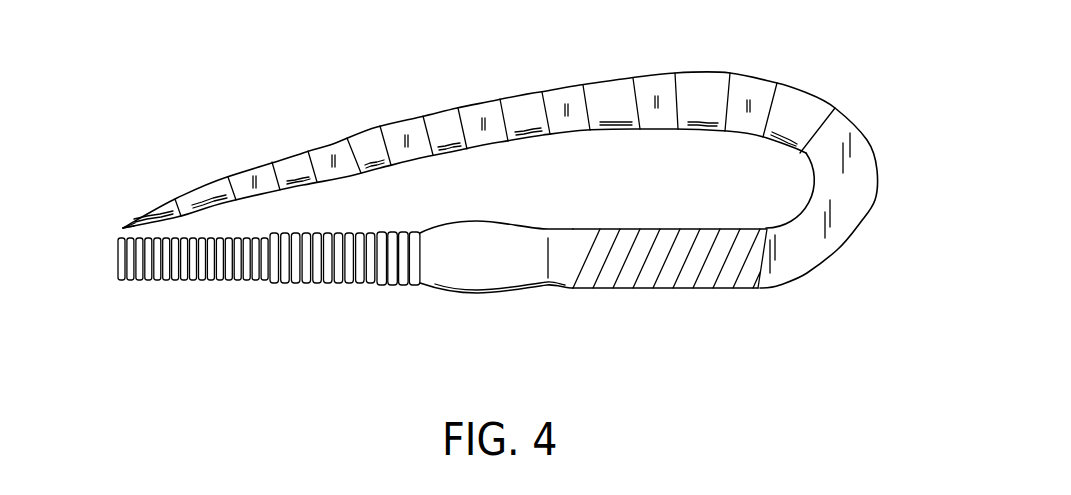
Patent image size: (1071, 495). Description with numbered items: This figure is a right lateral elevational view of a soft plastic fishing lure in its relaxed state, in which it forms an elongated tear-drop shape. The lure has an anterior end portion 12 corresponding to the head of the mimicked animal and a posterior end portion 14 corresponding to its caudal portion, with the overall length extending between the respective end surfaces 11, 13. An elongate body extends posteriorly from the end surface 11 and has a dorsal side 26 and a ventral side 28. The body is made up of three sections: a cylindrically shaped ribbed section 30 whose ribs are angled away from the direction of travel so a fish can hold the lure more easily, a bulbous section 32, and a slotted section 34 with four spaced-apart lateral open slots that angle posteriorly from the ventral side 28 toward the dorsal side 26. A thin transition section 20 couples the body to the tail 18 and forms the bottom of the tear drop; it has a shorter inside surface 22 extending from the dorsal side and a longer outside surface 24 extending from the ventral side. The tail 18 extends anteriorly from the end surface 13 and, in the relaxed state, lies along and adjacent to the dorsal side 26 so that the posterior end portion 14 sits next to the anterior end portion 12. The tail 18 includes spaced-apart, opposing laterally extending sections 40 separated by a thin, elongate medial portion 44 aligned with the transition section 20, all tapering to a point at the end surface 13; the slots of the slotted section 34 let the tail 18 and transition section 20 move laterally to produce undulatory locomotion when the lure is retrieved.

The end surface 11 is at (118, 260).
The anterior end portion 12 is at (238, 295).
The end surface 13 is at (122, 227).
The posterior end portion 14 is at (112, 176).
The tail 18 is at (414, 82).
The transition section 20 is at (689, 253).
The inside surface 22 is at (812, 190).
The outside surface 24 is at (861, 222).
The dorsal side 26 is at (575, 228).
The ventral side 28 is at (558, 290).
The ribbed section 30 is at (179, 298).
The bulbous section 32 is at (470, 275).
The slotted section 34 is at (670, 283).
The laterally extending sections 40 is at (280, 167).
The medial portion 44 is at (250, 175).